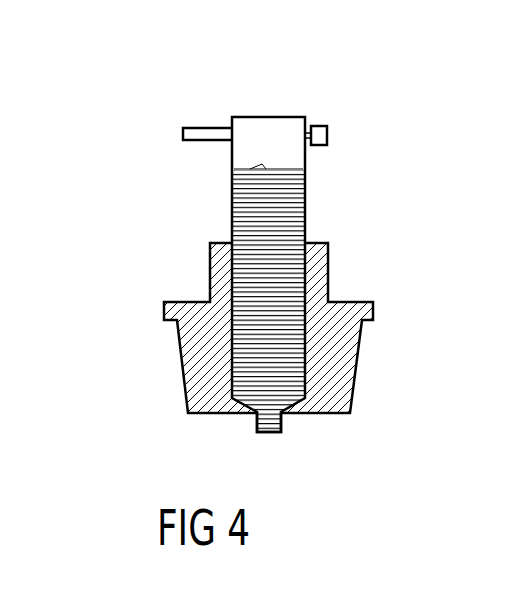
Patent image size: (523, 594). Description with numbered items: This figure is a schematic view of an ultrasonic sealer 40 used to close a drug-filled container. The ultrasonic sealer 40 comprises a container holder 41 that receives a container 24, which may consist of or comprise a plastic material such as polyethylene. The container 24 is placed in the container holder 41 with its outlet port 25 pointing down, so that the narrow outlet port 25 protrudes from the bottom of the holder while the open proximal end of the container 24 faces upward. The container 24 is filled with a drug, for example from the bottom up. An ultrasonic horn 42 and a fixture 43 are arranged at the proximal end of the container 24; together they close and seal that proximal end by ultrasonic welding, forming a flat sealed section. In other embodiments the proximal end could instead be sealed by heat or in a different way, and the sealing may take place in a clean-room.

The ultrasonic sealer 40 is at (148, 129).
The container holder 41 is at (192, 352).
The ultrasonic horn 42 is at (208, 128).
The fixture 43 is at (318, 125).
The container 24 is at (232, 216).
The outlet port 25 is at (282, 427).